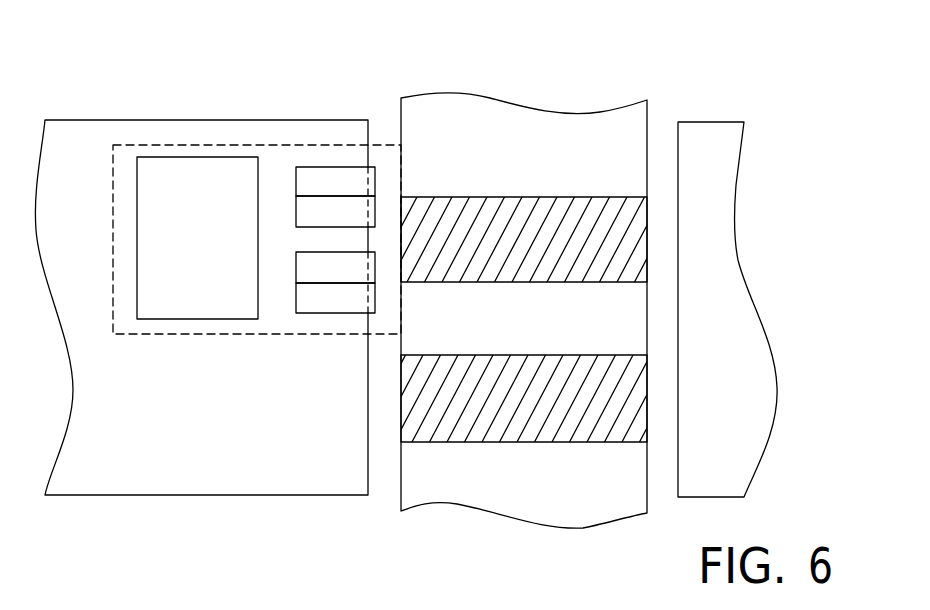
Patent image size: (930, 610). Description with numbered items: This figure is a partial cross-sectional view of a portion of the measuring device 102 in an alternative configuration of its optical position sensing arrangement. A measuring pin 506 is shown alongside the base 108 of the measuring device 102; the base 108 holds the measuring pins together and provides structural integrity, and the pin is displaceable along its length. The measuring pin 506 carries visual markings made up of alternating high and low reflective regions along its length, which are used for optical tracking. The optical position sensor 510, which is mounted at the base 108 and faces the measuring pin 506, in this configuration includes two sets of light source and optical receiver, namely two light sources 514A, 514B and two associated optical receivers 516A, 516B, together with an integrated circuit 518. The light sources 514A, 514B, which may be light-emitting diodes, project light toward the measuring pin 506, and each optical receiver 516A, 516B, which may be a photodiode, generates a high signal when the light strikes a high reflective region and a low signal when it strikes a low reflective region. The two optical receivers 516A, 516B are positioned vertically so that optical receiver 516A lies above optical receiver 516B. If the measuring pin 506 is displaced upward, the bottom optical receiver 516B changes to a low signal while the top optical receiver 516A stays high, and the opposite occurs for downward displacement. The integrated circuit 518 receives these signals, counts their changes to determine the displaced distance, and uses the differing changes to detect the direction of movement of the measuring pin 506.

The measuring device 102 is at (739, 44).
The base 108 is at (153, 120).
The measuring pin 506 is at (527, 105).
The optical position sensor 510 is at (207, 145).
The light source 514A is at (330, 167).
The light source 514B is at (296, 266).
The optical receiver 516A is at (296, 210).
The optical receiver 516B is at (308, 313).
The integrated circuit 518 is at (193, 319).